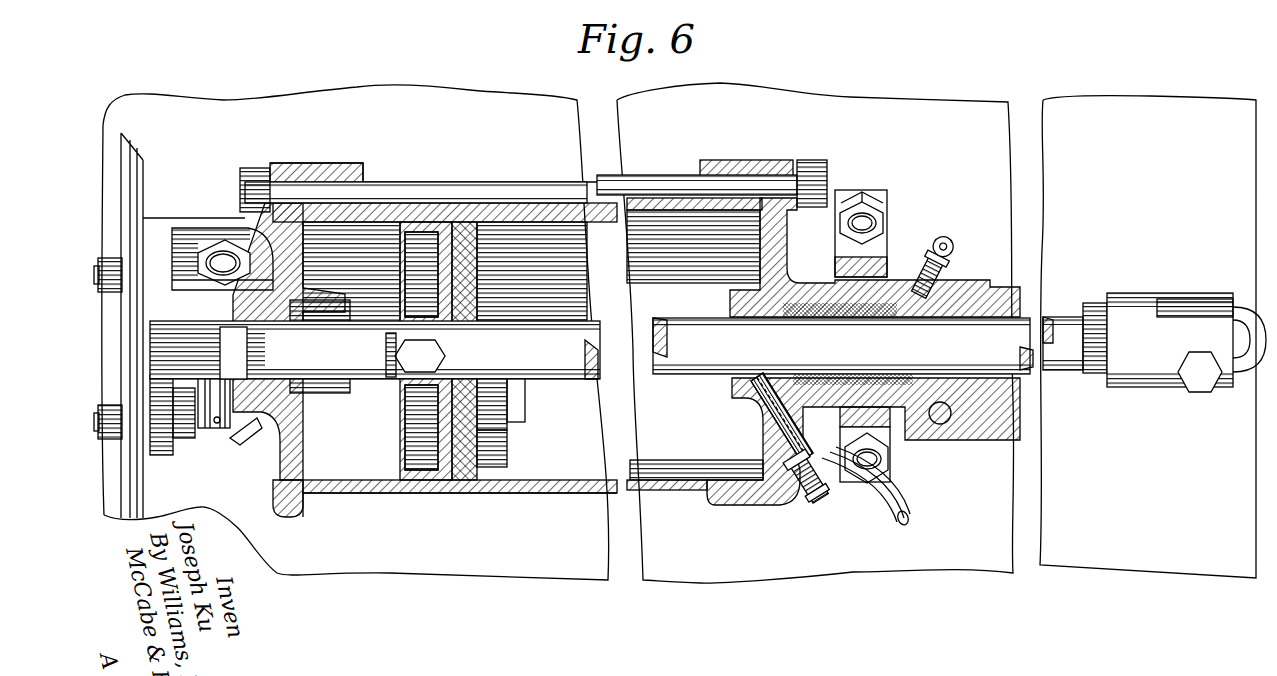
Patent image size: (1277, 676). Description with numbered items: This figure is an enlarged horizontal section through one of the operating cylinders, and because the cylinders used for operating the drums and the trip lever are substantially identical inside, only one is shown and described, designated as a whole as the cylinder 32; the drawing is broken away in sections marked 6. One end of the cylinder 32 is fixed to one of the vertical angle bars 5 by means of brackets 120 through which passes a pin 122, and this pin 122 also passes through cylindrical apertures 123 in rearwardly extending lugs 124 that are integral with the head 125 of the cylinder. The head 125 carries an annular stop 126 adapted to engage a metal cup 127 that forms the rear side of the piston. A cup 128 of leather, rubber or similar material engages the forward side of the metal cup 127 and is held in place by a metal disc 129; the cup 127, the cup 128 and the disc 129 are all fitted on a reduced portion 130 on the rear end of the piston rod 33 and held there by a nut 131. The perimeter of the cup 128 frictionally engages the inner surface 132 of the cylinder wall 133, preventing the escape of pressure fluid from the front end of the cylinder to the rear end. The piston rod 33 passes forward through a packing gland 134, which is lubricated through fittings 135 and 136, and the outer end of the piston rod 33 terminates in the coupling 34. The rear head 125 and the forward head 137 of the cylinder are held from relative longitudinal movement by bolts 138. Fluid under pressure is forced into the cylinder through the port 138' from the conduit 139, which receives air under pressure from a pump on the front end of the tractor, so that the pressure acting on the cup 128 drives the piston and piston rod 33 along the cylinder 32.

The vertical angle bar 5 is at (145, 160).
The housing sections 6 is at (456, 104).
The cylinder 32 is at (543, 499).
The piston rod 33 is at (578, 352).
The coupling 34 is at (1258, 293).
The brackets 120 is at (189, 227).
The pin 122 is at (234, 431).
The cylindrical apertures 123 is at (262, 447).
The rearwardly extending lugs 124 is at (204, 441).
The head 125 is at (350, 520).
The annular stop 126 is at (404, 380).
The metal cup 127 is at (420, 224).
The cup 128 is at (470, 224).
The metal disc 129 is at (478, 456).
The reduced portion 130 is at (470, 384).
The nut 131 is at (423, 374).
The inner surface 132 is at (524, 493).
The cylinder wall 133 is at (600, 494).
The packing gland 134 is at (924, 413).
The fitting 135 is at (936, 249).
The fitting 136 is at (825, 505).
The head 137 is at (791, 229).
The bolts 138 is at (712, 175).
The port 138' is at (767, 467).
The conduit 139 is at (900, 520).